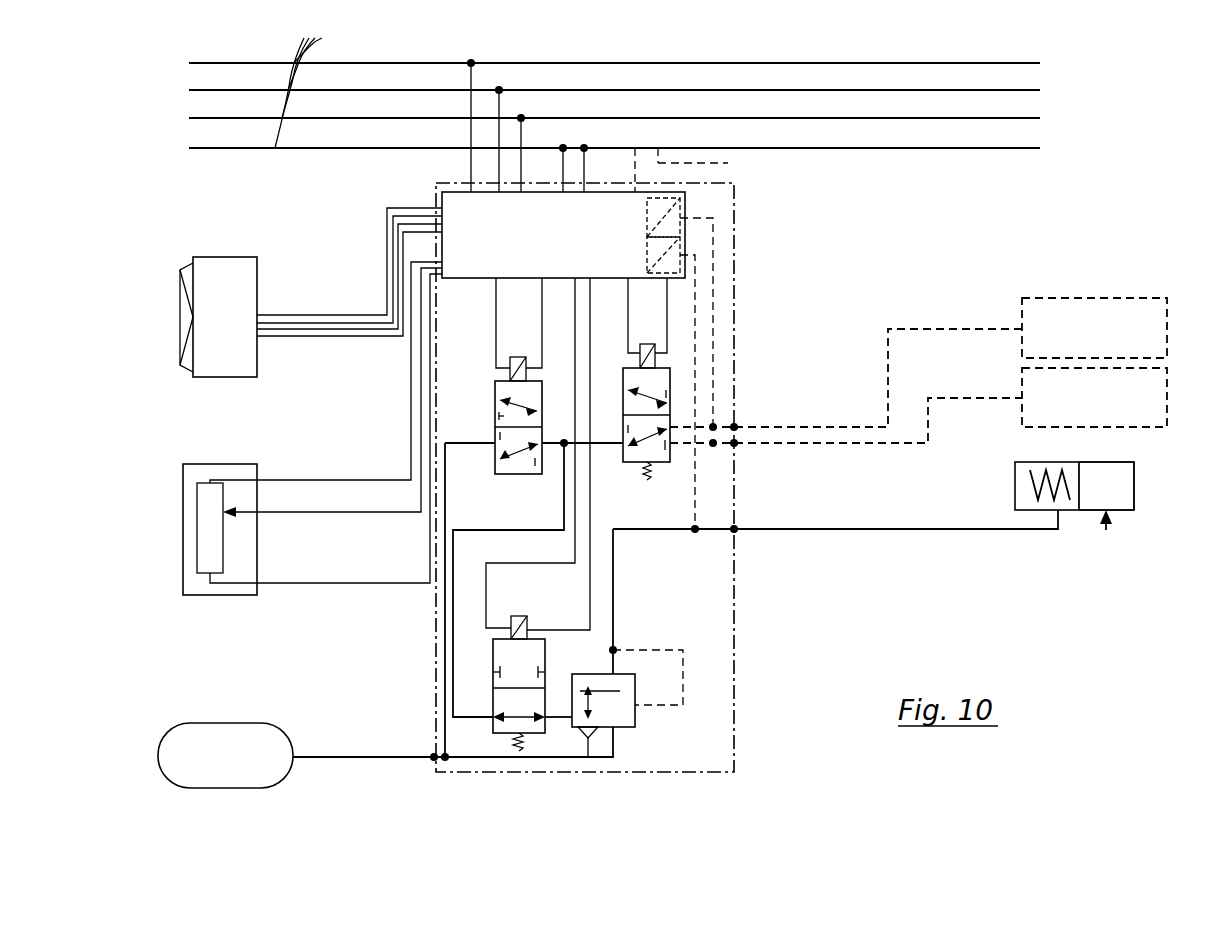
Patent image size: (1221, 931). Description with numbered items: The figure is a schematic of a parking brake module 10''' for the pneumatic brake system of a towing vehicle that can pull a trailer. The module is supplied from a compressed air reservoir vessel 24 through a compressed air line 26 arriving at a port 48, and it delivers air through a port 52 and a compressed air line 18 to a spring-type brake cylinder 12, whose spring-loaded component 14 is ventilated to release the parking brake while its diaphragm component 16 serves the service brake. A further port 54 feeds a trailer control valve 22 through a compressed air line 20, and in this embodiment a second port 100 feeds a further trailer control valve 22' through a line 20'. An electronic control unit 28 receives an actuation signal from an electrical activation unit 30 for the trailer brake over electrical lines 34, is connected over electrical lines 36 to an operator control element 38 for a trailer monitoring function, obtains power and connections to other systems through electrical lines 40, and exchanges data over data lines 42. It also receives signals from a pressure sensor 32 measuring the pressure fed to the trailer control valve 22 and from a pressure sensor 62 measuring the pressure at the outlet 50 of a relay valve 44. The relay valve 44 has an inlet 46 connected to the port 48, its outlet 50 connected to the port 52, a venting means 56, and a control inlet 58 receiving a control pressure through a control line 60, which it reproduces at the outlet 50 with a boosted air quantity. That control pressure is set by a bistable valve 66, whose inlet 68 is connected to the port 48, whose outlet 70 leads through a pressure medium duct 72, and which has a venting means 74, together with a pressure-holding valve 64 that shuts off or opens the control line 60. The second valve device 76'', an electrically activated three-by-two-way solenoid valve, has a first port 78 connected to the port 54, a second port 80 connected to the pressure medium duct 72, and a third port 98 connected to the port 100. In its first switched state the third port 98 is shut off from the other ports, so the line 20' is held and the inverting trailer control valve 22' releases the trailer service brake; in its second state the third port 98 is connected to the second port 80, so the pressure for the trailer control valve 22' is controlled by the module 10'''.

The parking brake module 10''' is at (611, 477).
The spring-type brake cylinder 12 is at (1093, 496).
The spring-loaded component 14 is at (1020, 462).
The diaphragm component 16 is at (1134, 480).
The compressed air line 18 is at (910, 532).
The compressed air line 20 is at (846, 378).
The line 20' is at (846, 439).
The trailer control valve 22 is at (1094, 328).
The trailer control valve 22' is at (1094, 397).
The compressed air reservoir vessel 24 is at (265, 788).
The compressed air line 26 is at (360, 760).
The electronic control unit 28 is at (478, 227).
The electrical activation unit 30 is at (183, 494).
The pressure sensor 32 is at (668, 198).
The electrical lines 34 is at (296, 478).
The electrical lines 36 is at (298, 314).
The operator control element 38 is at (208, 258).
The electrical lines 40 is at (614, 80).
The data lines 42 is at (728, 163).
The relay valve 44 is at (635, 714).
The inlet 46 is at (615, 728).
The port 48 is at (432, 762).
The outlet 50 is at (615, 672).
The port 52 is at (736, 533).
The port 54 is at (740, 424).
The venting means 56 is at (588, 758).
The control inlet 58 is at (564, 716).
The control line 60 is at (556, 722).
The pressure sensor 62 is at (680, 248).
The pressure-holding valve 64 is at (530, 638).
The bistable valve 66 is at (508, 378).
The inlet 68 is at (494, 441).
The outlet 70 is at (548, 392).
The pressure medium duct 72 is at (566, 514).
The venting means 74 is at (495, 466).
The second valve device 76'' is at (660, 398).
The first port 78 is at (670, 418).
The second port 80 is at (622, 440).
The third port 98 is at (668, 448).
The port 100 is at (736, 448).